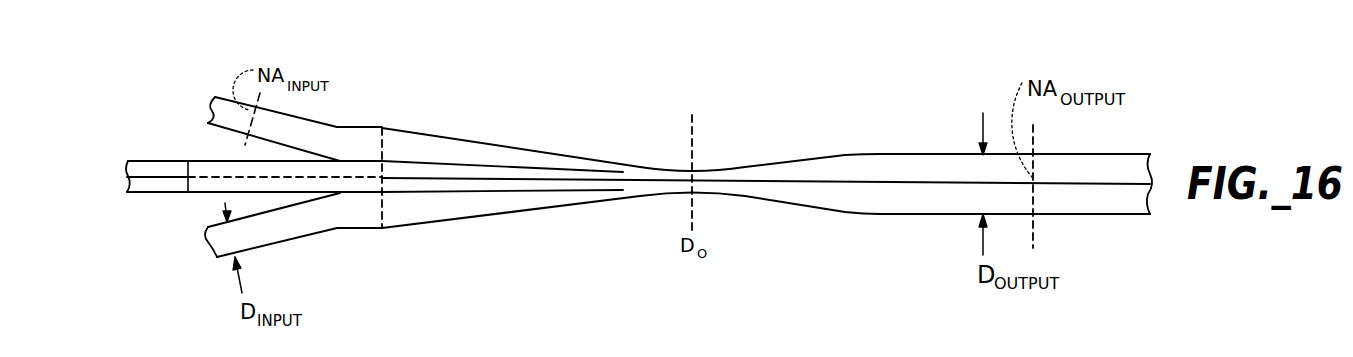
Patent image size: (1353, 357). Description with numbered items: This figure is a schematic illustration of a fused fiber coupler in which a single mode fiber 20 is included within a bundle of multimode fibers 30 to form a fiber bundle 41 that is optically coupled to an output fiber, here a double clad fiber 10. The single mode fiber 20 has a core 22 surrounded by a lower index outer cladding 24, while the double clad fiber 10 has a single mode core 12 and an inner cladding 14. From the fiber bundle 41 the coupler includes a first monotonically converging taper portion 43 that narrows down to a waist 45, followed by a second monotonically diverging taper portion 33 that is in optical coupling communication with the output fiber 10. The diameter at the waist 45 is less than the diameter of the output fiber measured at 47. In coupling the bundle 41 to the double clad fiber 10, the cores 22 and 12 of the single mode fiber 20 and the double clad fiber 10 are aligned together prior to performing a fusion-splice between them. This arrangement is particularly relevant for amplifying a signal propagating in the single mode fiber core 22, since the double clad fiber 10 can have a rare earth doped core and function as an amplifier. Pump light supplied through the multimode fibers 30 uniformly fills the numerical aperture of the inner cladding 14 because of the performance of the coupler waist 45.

The double clad fiber 10 is at (1095, 155).
The single mode core 12 is at (910, 183).
The inner cladding 14 is at (1127, 163).
The single mode fiber 20 is at (163, 182).
The core 22 is at (177, 175).
The outer cladding 24 is at (163, 165).
The multimode fibers 30 is at (237, 183).
The second monotonically diverging taper portion 33 is at (778, 162).
The fiber bundle 41 is at (358, 127).
The first monotonically converging taper portion 43 is at (495, 143).
The waist 45 is at (695, 172).
The output diameter location 47 is at (983, 152).